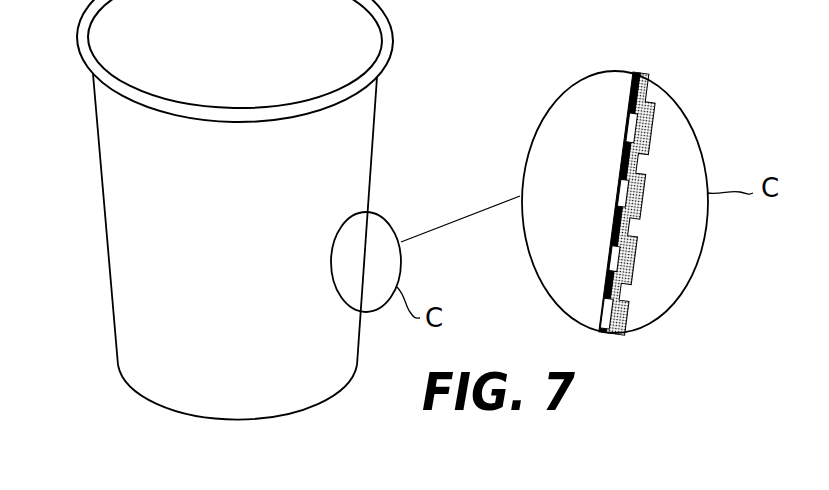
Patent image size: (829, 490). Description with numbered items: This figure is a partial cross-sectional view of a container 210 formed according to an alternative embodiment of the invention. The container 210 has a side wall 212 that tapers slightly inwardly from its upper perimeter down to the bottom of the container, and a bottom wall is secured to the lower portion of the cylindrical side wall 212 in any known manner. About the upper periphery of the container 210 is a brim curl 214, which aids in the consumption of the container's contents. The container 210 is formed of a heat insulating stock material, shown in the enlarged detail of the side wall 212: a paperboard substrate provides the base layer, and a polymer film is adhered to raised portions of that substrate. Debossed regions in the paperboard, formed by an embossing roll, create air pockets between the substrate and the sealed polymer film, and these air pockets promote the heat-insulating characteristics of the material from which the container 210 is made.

The container 210 is at (254, 210).
The side wall 212 is at (118, 288).
The brim curl 214 is at (95, 71).